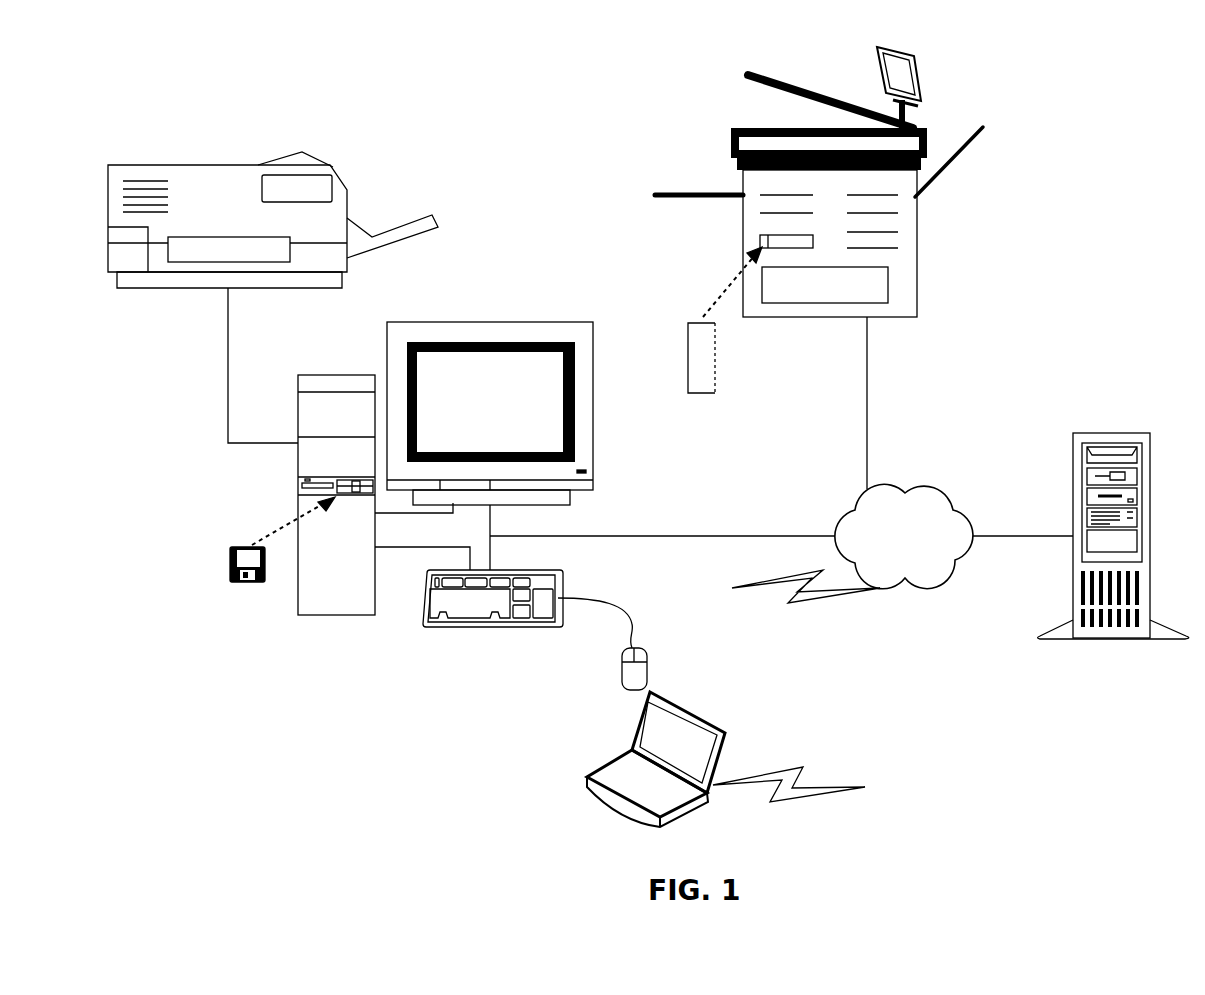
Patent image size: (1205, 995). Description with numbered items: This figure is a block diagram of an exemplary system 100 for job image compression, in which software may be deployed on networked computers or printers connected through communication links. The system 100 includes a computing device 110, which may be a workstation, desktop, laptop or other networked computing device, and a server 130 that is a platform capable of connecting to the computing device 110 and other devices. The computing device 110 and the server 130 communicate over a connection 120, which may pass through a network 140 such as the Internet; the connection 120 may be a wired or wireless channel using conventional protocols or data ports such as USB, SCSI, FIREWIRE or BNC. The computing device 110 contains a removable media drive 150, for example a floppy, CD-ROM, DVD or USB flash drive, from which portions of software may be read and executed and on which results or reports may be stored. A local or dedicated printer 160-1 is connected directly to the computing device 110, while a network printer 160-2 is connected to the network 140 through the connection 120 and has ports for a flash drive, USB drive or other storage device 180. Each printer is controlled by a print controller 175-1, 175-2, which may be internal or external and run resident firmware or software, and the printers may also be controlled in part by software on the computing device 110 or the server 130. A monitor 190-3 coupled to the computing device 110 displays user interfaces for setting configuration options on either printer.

The system 100 is at (1055, 45).
The computing device 110 is at (315, 375).
The connection 120 is at (781, 657).
The server 130 is at (1112, 433).
The network 140 is at (888, 548).
The removable media drive 150 is at (282, 554).
The printer 160-1 is at (253, 291).
The printer 160-2 is at (743, 218).
The print controller 175-1 is at (229, 249).
The print controller 175-2 is at (825, 285).
The storage device 180 is at (688, 358).
The monitor 190-3 is at (515, 322).